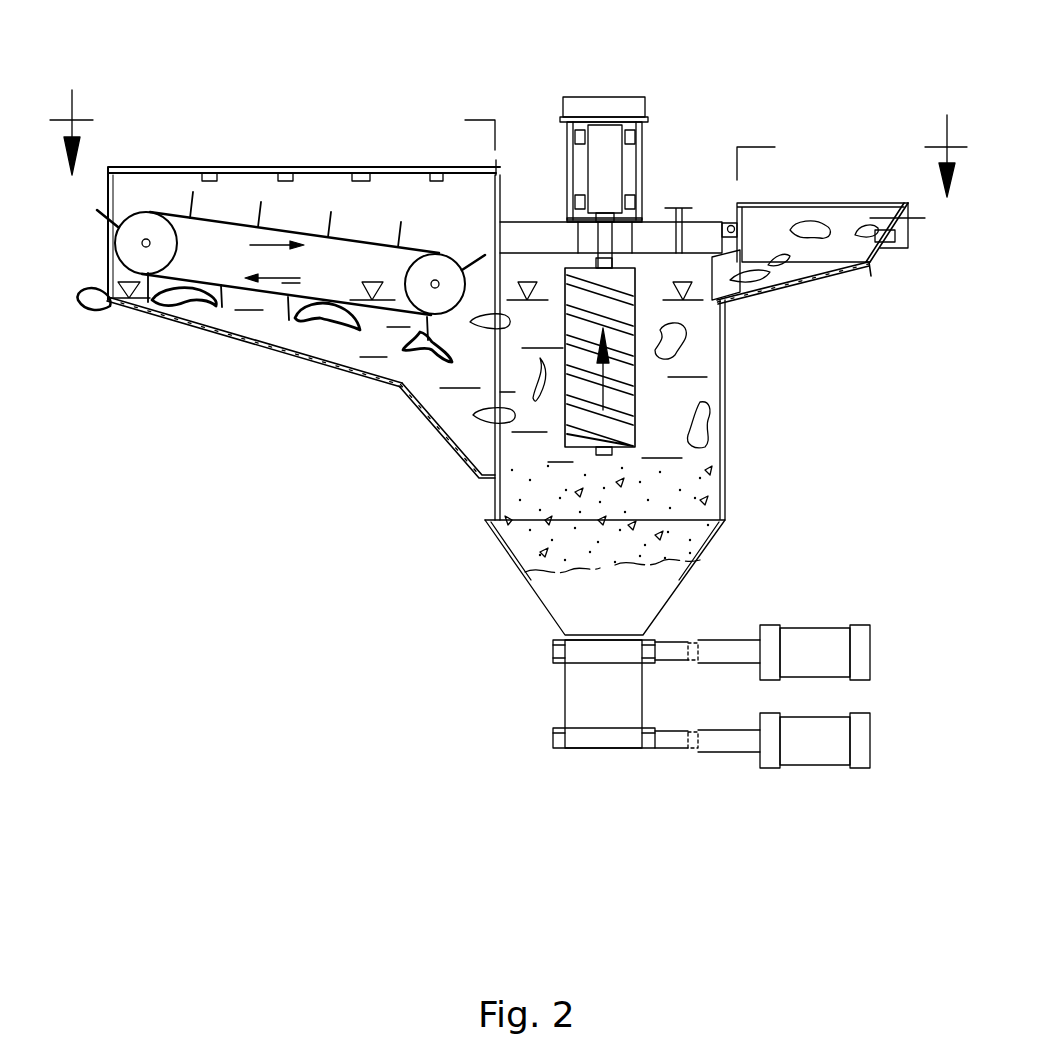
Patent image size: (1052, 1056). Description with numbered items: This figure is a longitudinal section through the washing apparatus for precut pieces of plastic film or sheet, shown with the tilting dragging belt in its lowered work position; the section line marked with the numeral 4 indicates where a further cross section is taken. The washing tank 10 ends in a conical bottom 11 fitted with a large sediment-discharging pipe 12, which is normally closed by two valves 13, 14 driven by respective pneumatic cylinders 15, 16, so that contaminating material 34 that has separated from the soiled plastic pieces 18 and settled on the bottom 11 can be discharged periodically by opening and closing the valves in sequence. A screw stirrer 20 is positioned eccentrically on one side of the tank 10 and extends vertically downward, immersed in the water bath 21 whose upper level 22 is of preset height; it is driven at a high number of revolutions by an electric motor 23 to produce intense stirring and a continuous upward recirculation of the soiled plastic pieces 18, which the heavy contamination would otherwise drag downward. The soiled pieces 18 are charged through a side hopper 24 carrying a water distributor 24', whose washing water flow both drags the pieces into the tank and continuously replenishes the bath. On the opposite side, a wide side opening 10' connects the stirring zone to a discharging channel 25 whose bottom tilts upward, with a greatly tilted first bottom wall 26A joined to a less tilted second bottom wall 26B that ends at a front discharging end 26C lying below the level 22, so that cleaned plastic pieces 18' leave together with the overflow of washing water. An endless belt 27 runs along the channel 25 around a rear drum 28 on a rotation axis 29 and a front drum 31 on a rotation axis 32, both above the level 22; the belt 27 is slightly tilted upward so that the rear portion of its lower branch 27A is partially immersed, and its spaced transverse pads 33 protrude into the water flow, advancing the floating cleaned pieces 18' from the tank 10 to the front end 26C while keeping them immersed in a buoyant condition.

The section line for FIG. 4 is at (508, 141).
The washing tank 10 is at (658, 372).
The side opening 10' is at (524, 277).
The conical bottom 11 is at (708, 546).
The sediment-discharging pipe 12 is at (584, 702).
The valve 13 is at (595, 653).
The valve 14 is at (597, 742).
The pneumatic cylinder 15 is at (822, 644).
The pneumatic cylinder 16 is at (818, 754).
The soiled plastic pieces 18 is at (705, 282).
The cleaned plastic pieces 18' is at (275, 380).
The screw stirrer 20 is at (640, 385).
The water bath 21 is at (513, 392).
The upper level 22 is at (118, 290).
The electric motor 23 is at (625, 105).
The side hopper 24 is at (821, 270).
The water distributor 24' is at (920, 250).
The discharging channel 25 is at (325, 192).
The first bottom wall 26A is at (468, 455).
The second bottom wall 26B is at (112, 305).
The front discharging end 26C is at (117, 305).
The endless belt 27 is at (233, 196).
The lower branch 27A is at (195, 328).
The rear drum 28 is at (436, 282).
The rotation axis 29 is at (433, 286).
The front drum 31 is at (137, 230).
The rotation axis 32 is at (148, 240).
The transverse pads 33 is at (266, 212).
The contaminating material 34 is at (722, 518).